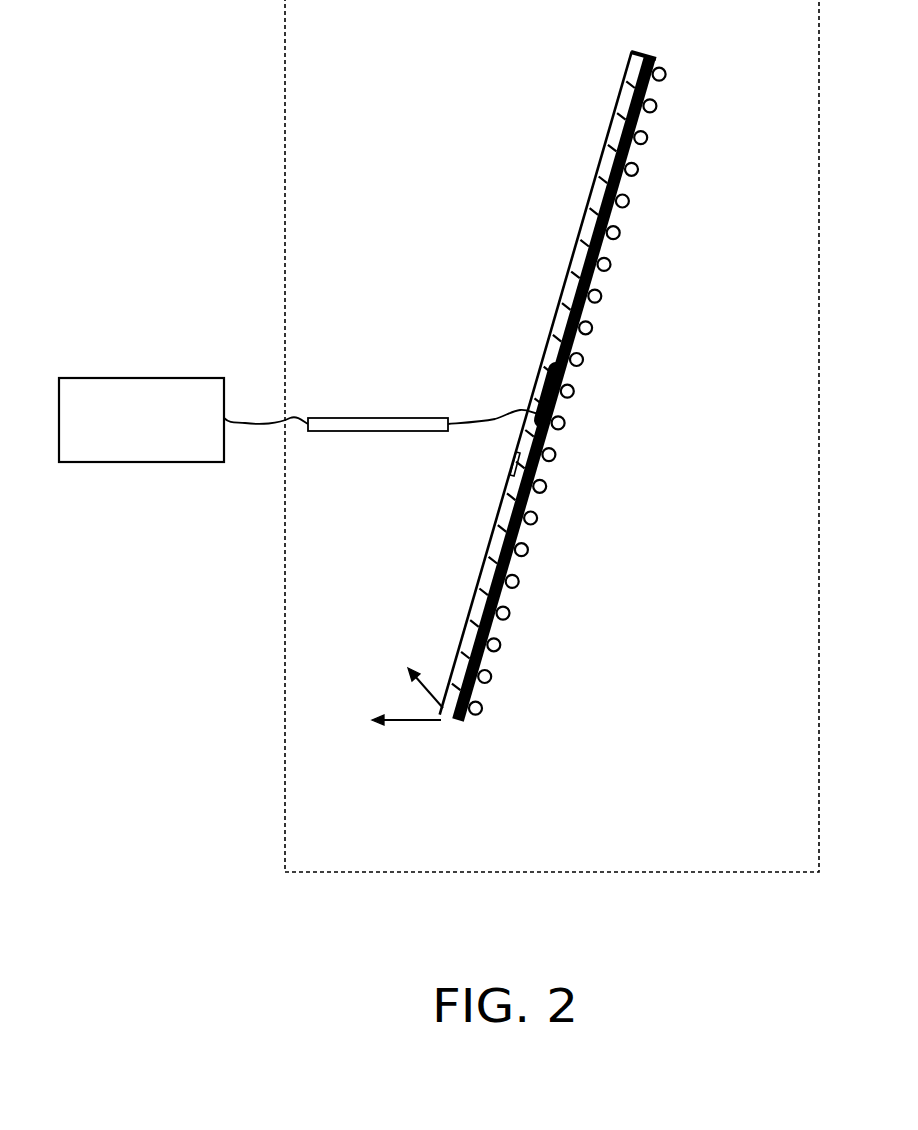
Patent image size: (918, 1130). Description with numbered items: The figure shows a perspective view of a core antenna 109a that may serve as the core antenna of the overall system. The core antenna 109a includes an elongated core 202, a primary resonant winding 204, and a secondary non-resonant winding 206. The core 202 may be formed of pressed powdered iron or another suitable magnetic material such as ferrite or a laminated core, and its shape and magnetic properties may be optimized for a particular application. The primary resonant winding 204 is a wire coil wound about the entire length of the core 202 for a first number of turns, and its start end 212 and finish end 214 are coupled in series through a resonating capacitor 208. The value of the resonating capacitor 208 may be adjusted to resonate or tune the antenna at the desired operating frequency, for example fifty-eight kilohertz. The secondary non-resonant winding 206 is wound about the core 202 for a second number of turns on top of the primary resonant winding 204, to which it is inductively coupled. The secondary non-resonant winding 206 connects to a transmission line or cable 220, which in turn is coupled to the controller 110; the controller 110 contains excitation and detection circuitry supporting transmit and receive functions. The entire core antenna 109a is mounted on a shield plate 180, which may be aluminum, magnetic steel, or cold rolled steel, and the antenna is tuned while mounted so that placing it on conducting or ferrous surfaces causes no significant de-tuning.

The core antenna 109a is at (460, 190).
The controller 110 is at (110, 378).
The shield plate 180 is at (720, 872).
The core 202 is at (522, 556).
The primary resonant winding 204 is at (660, 138).
The secondary non-resonant winding 206 is at (584, 383).
The resonating capacitor 208 is at (512, 462).
The start end 212 is at (624, 53).
The finish end 214 is at (444, 727).
The cable 220 is at (375, 418).